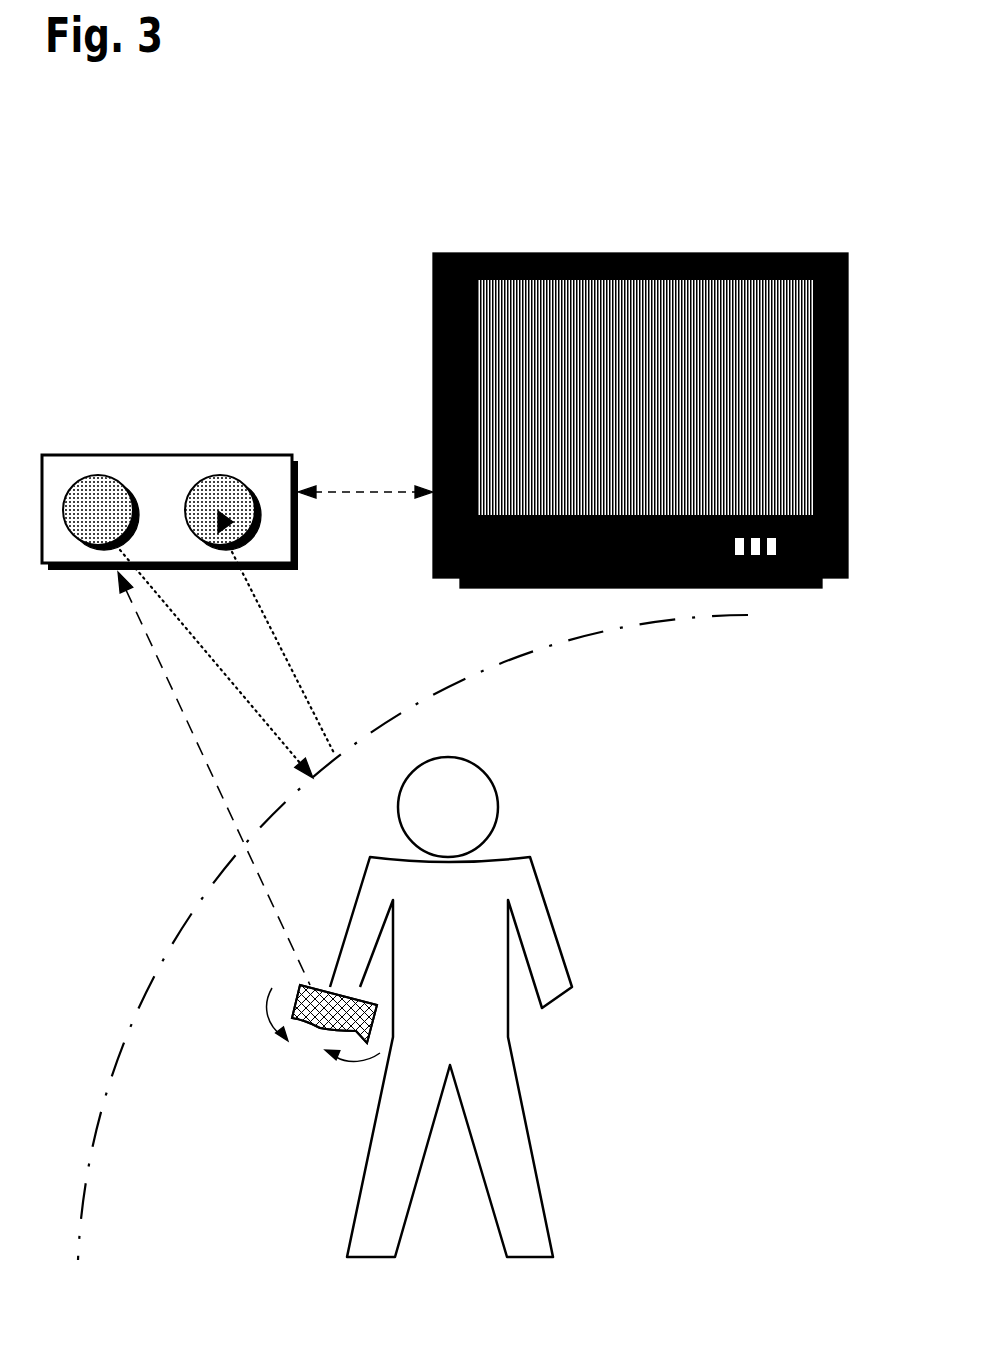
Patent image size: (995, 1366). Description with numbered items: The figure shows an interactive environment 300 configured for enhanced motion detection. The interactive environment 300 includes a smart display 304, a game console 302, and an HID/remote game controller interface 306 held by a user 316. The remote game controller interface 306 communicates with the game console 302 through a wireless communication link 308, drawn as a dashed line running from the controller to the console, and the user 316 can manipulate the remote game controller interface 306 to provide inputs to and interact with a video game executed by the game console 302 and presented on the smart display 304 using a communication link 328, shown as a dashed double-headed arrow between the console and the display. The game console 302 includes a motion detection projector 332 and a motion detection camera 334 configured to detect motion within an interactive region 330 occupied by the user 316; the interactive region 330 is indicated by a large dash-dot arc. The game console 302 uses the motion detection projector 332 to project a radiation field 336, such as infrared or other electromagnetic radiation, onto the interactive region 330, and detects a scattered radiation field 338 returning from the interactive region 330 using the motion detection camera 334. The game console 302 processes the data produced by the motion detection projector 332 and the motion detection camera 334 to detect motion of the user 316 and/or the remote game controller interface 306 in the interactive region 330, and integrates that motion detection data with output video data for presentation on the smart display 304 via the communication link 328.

The interactive environment 300 is at (752, 120).
The game console 302 is at (170, 528).
The smart display 304 is at (433, 313).
The HID/remote game controller interface 306 is at (308, 1017).
The wireless communication link 308 is at (197, 752).
The user 316 is at (533, 883).
The communication link 328 is at (363, 494).
The interactive region 330 is at (260, 822).
The motion detection projector 332 is at (98, 492).
The motion detection camera 334 is at (221, 492).
The radiation field 336 is at (227, 672).
The scattered radiation field 338 is at (318, 708).